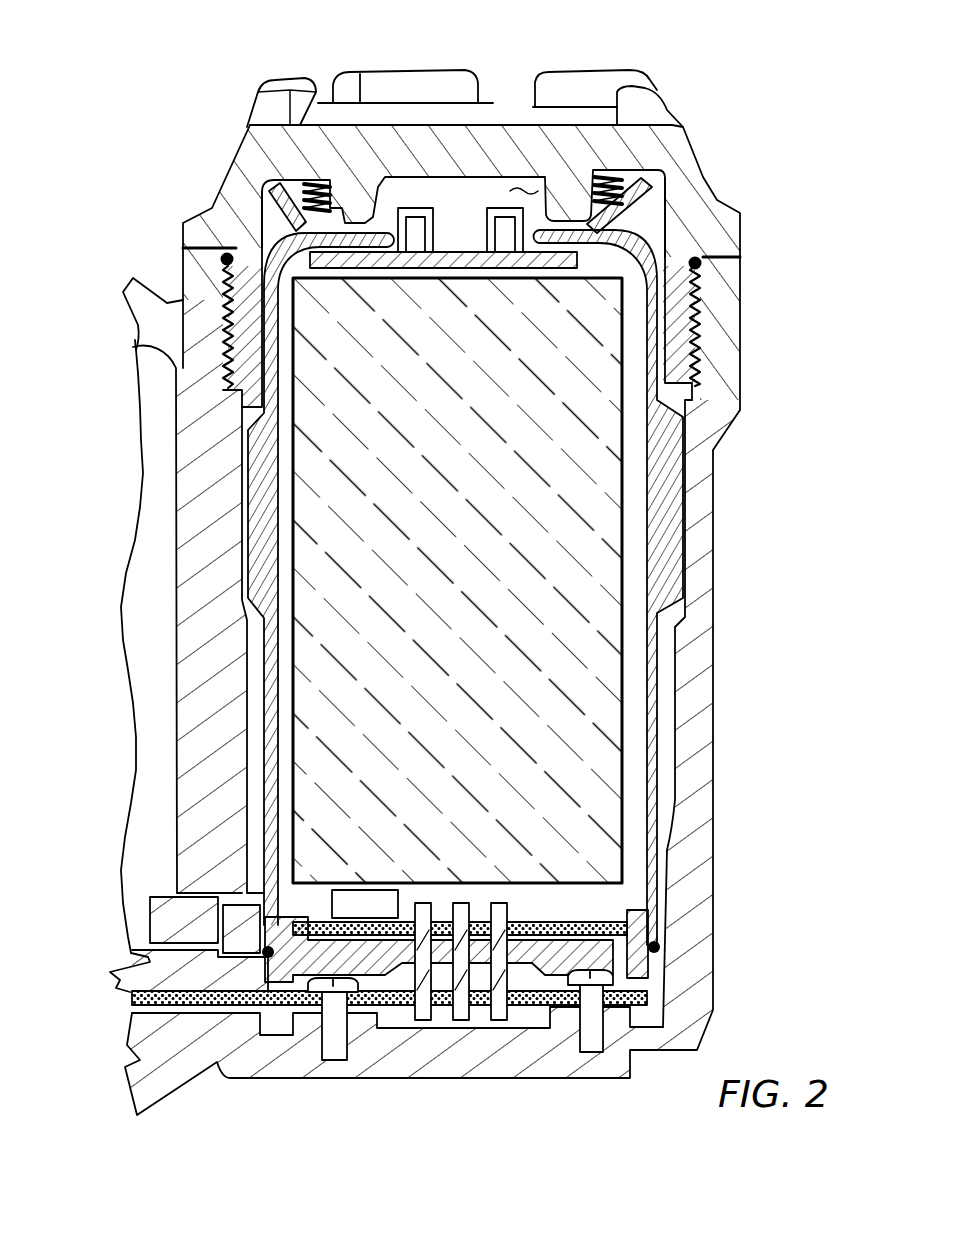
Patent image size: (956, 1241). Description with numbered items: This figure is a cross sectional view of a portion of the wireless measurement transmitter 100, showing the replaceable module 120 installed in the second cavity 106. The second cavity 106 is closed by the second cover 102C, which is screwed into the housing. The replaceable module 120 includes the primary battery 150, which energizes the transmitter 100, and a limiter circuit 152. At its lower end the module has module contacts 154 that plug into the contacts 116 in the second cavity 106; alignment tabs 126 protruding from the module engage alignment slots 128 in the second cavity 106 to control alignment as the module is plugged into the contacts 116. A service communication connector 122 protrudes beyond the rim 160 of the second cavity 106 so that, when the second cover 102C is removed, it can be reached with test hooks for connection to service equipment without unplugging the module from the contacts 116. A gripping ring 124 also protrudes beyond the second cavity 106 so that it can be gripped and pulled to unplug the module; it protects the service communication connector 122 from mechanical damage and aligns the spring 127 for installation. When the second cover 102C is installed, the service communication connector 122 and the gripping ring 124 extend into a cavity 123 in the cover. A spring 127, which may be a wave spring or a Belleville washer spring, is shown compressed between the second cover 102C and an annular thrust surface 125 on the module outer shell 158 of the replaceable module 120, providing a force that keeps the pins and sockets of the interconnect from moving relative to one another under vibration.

The wireless measurement transmitter 100 is at (158, 84).
The second cover 102C is at (493, 122).
The second cavity 106 is at (665, 723).
The contacts 116 is at (421, 1020).
The replaceable module 120 is at (660, 683).
The service communication connector 122 is at (497, 208).
The cavity 123 is at (528, 188).
The gripping ring 124 is at (655, 200).
The thrust surface 125 is at (620, 218).
The alignment tabs 126 is at (663, 403).
The springs 127 is at (268, 182).
The alignment slots 128 is at (700, 580).
The primary battery 150 is at (478, 529).
The limiter circuit 152 is at (386, 916).
The module contacts 154 is at (435, 903).
The module outer shell 158 is at (285, 248).
The rim 160 is at (712, 265).